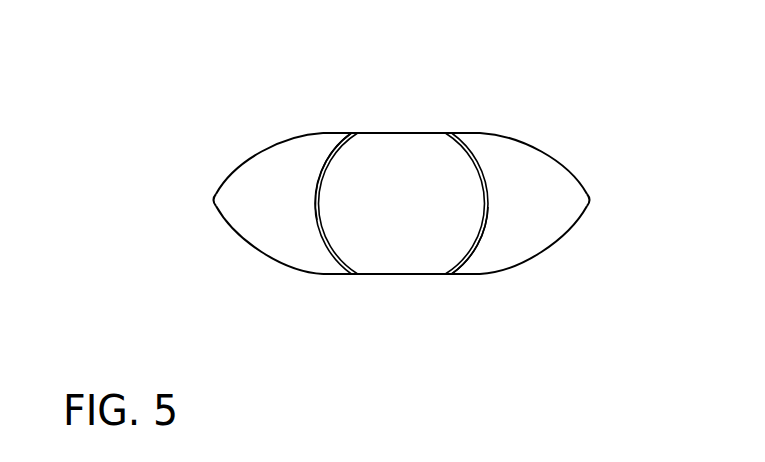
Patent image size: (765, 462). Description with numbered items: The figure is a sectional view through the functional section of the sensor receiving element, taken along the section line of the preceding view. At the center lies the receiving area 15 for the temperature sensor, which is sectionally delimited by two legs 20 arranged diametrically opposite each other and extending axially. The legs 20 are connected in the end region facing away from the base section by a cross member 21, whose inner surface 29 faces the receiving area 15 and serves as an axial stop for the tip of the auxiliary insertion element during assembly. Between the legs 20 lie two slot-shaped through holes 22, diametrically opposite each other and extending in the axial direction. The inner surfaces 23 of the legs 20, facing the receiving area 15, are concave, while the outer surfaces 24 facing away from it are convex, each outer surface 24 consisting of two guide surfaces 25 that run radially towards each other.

The receiving area 15 is at (405, 200).
The legs 20 is at (408, 186).
The cross member 21 is at (445, 159).
The through holes 22 is at (392, 131).
The inner surfaces 23 is at (317, 220).
The outer surfaces 24 is at (229, 213).
The guide surfaces 25 is at (240, 158).
The inner surface 29 is at (413, 146).